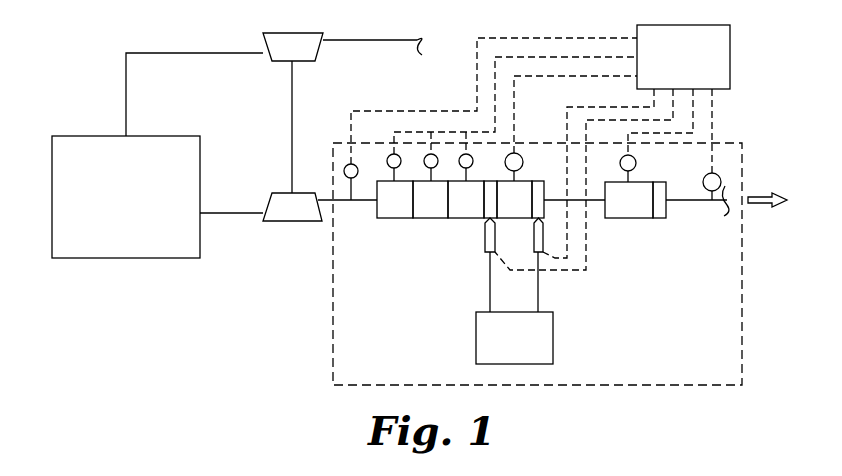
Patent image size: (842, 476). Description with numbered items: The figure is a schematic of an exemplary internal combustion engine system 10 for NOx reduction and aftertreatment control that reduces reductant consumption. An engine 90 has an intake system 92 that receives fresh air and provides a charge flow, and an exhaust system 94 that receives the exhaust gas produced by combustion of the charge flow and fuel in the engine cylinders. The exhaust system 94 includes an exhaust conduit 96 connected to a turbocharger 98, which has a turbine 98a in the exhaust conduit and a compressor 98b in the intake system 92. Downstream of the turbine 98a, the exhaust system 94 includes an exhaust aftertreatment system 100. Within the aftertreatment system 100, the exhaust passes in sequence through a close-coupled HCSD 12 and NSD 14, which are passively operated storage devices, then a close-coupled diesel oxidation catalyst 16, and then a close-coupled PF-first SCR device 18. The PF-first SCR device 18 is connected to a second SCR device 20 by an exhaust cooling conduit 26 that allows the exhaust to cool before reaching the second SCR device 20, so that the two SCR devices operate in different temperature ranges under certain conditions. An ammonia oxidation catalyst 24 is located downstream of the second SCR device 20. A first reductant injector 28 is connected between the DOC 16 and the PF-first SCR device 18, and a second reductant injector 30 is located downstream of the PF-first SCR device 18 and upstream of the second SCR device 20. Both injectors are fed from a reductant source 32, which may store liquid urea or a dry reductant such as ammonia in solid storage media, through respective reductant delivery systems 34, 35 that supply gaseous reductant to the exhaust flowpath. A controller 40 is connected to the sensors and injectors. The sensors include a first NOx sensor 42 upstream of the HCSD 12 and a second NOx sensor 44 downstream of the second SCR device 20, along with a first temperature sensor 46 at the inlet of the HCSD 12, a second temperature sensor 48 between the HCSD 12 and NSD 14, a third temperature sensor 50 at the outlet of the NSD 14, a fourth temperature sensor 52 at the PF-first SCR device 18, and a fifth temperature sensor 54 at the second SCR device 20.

The internal combustion engine system 10 is at (97, 67).
The HCSD 12 is at (395, 199).
The NSD 14 is at (430, 199).
The diesel oxidation catalyst 16 is at (466, 199).
The PF-first SCR device 18 is at (514, 199).
The second SCR device 20 is at (629, 200).
The ammonia oxidation catalyst 24 is at (660, 220).
The exhaust cooling conduit 26 is at (556, 197).
The first reductant injector 28 is at (484, 232).
The second reductant injector 30 is at (533, 246).
The reductant source 32 is at (514, 338).
The reductant delivery system 34 is at (489, 282).
The reductant delivery system 35 is at (537, 297).
The controller 40 is at (540, 147).
The first NOx sensor 42 is at (344, 170).
The second NOx sensor 44 is at (704, 178).
The first temperature sensor 46 is at (388, 158).
The second temperature sensor 48 is at (426, 156).
The third temperature sensor 50 is at (462, 155).
The fourth temperature sensor 52 is at (520, 155).
The fifth temperature sensor 54 is at (636, 166).
The engine 90 is at (126, 197).
The intake system 92 is at (168, 53).
The exhaust system 94 is at (246, 260).
The exhaust conduit 96 is at (222, 213).
The turbocharger 98 is at (280, 102).
The turbine 98a is at (289, 218).
The compressor 98b is at (292, 40).
The exhaust aftertreatment system 100 is at (750, 297).